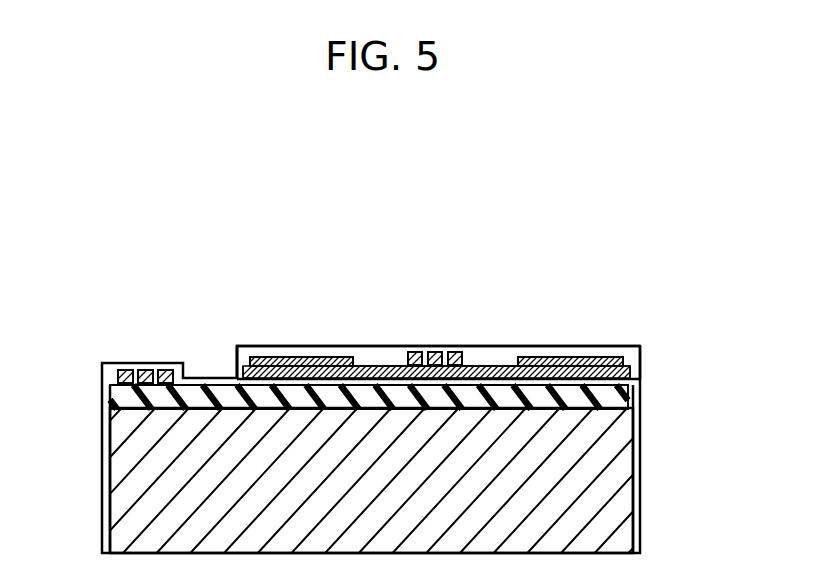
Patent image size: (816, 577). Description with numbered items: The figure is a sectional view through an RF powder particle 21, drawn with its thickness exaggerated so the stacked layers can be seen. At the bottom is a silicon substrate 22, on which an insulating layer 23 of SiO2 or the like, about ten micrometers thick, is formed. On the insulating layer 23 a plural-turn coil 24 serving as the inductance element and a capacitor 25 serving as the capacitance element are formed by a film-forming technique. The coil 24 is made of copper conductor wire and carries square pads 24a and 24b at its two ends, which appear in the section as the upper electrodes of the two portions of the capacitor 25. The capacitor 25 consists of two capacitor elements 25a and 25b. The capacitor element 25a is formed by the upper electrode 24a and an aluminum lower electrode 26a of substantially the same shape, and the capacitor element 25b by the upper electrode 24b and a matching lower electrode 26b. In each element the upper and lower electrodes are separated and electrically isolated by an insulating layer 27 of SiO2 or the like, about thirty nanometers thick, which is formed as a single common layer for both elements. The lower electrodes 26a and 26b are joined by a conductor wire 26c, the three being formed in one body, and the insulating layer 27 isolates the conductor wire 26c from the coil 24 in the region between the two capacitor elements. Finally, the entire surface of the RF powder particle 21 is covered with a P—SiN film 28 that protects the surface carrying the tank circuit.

The RF powder particle 21 is at (646, 457).
The silicon substrate 22 is at (623, 505).
The insulating layer 23 is at (625, 400).
The coil 24 is at (130, 358).
The pad 24a is at (300, 356).
The pad 24b is at (568, 357).
The capacitor 25 is at (350, 338).
The capacitor element 25a is at (246, 352).
The capacitor element 25b is at (632, 342).
The lower electrode 26a is at (240, 378).
The lower electrode 26b is at (630, 379).
The conductor wire 26c is at (402, 372).
The insulating layer 27 is at (512, 363).
The P—SiN film 28 is at (100, 394).